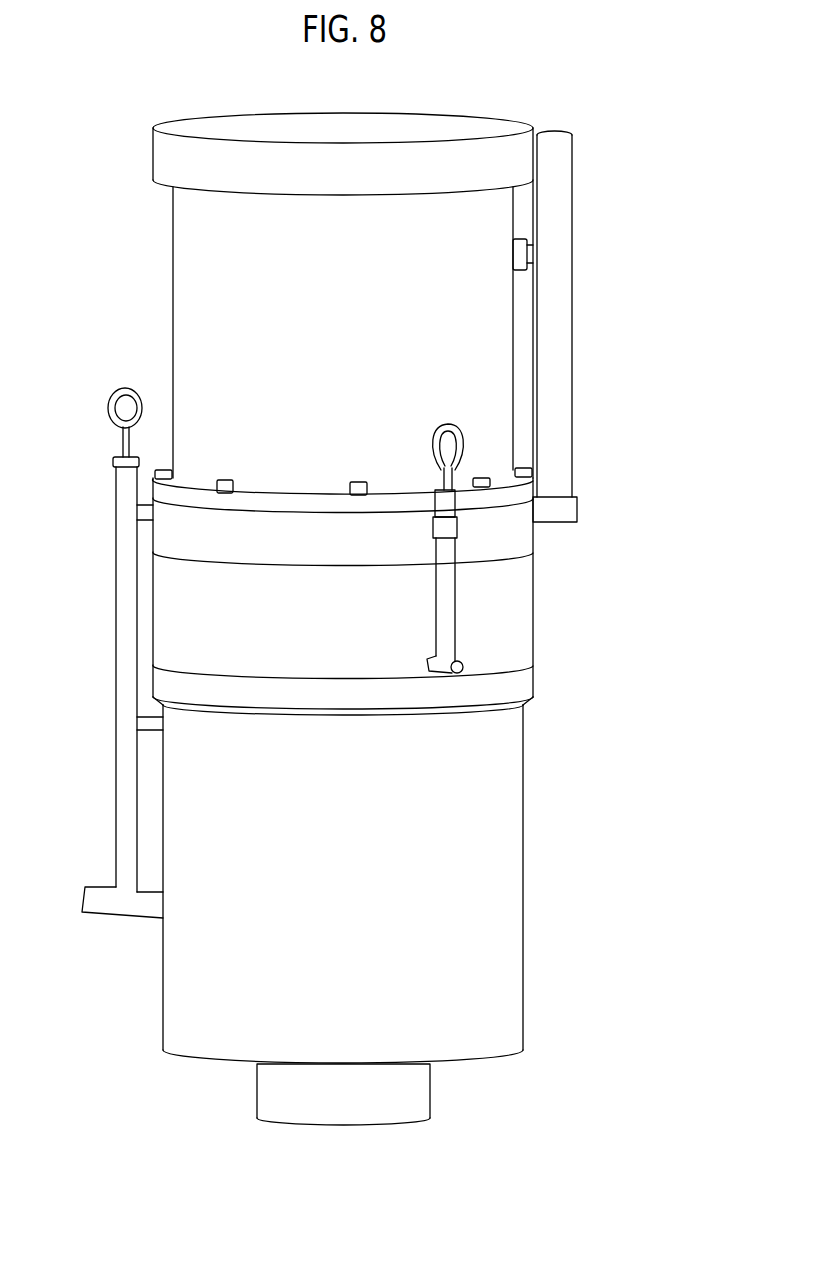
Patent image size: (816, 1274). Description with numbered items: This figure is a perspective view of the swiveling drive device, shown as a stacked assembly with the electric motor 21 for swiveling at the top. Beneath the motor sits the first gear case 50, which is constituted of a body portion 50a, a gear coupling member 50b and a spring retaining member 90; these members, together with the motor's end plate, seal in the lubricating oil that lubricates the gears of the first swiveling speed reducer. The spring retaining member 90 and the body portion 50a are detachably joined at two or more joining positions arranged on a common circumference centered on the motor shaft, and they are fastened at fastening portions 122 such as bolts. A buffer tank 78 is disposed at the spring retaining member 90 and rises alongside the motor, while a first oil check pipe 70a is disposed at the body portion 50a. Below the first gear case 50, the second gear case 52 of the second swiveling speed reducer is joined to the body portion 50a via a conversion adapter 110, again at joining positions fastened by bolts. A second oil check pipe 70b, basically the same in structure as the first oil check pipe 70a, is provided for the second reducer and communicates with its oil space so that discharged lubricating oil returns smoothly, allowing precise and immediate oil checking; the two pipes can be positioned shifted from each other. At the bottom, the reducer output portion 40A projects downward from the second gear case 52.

The electric motor for swiveling 21 is at (450, 225).
The buffer tank 78 is at (552, 323).
The fastening portions 122 is at (477, 478).
The spring retaining member 90 is at (502, 538).
The first gear case 50 is at (431, 570).
The body portion 50a is at (431, 591).
The gear coupling member 50b is at (343, 701).
The first oil check pipe 70a is at (443, 598).
The conversion adapter 110 is at (500, 693).
The second gear case 52 is at (437, 906).
The discharge port portion 40A is at (408, 1097).
The second oil check pipe 70b is at (128, 630).